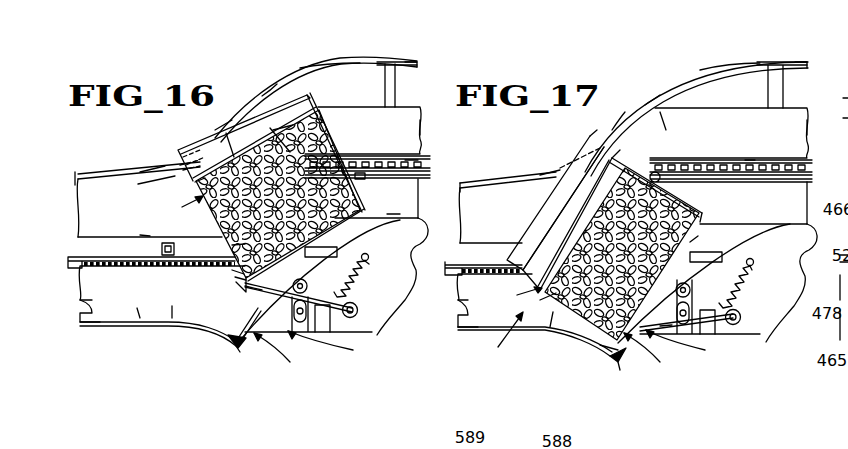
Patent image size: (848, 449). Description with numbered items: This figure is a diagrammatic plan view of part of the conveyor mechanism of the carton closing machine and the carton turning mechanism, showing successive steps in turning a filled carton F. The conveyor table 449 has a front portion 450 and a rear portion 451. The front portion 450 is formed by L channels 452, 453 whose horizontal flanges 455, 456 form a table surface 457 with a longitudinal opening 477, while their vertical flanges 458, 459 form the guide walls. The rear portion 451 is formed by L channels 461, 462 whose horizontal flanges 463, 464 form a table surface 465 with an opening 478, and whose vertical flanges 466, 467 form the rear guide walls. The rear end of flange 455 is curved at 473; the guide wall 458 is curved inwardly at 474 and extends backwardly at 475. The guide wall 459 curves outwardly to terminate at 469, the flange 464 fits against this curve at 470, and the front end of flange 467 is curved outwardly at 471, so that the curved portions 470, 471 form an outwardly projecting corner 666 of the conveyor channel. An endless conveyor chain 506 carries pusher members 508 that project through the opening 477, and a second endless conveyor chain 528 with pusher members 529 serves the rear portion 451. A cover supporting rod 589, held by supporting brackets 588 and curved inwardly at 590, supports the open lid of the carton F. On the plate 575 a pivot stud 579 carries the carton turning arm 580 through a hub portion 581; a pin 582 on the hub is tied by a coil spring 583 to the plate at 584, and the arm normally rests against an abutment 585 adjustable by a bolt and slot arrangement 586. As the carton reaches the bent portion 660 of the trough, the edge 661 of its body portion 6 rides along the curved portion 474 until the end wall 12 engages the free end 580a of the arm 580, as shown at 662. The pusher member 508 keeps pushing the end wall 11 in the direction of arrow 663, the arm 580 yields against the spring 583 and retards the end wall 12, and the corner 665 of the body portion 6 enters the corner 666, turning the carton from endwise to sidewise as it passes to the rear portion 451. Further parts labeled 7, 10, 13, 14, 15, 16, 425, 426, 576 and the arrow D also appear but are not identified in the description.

In FIG. 16, the body portion 6 is at (388, 209).
In FIG. 17, the body portion 6 is at (698, 242).
In FIG. 16, the lid hinge 7 is at (198, 148).
In FIG. 17, the lid hinge 7 is at (535, 240).
In FIG. 16, the box corner 10 is at (249, 284).
In FIG. 17, the box corner 10 is at (700, 226).
In FIG. 16, the end wall 11 is at (320, 158).
In FIG. 17, the end wall 11 is at (698, 206).
In FIG. 16, the end wall 12 is at (232, 245).
In FIG. 17, the end wall 12 is at (533, 302).
In FIG. 16, the lid plate 13 is at (199, 142).
In FIG. 17, the lid plate 13 is at (553, 193).
In FIG. 16, the lid section 14 is at (285, 123).
In FIG. 17, the lid section 14 is at (598, 189).
In FIG. 16, the lid lower section 15 is at (145, 187).
In FIG. 17, the lid lower section 15 is at (531, 264).
In FIG. 16, the lid middle section 16 is at (248, 146).
In FIG. 17, the lid middle section 16 is at (552, 225).
In FIG. 16, the rail assembly 425 is at (397, 157).
In FIG. 17, the rail assembly 425 is at (773, 158).
In FIG. 16, the direction of motion 426 is at (341, 345).
In FIG. 17, the direction of motion 426 is at (696, 346).
In FIG. 16, the conveyor table 449 is at (138, 315).
In FIG. 17, the conveyor table 449 is at (552, 322).
In FIG. 16, the front portion 450 is at (358, 123).
In FIG. 17, the front portion 450 is at (722, 120).
In FIG. 16, the rear portion 451 is at (97, 193).
In FIG. 17, the rear portion 451 is at (478, 202).
In FIG. 16, the L channel 452 is at (422, 128).
In FIG. 17, the L channel 452 is at (811, 132).
In FIG. 16, the L channel 453 is at (408, 226).
In FIG. 17, the L channel 453 is at (782, 238).
In FIG. 16, the horizontal flange 455 is at (372, 128).
In FIG. 17, the horizontal flange 455 is at (674, 140).
In FIG. 16, the horizontal flange 456 is at (401, 203).
In FIG. 17, the horizontal flange 456 is at (743, 213).
In FIG. 16, the table surface 457 is at (430, 195).
In FIG. 17, the table surface 457 is at (805, 210).
In FIG. 16, the vertical flange 458 is at (446, 90).
In FIG. 17, the vertical flange 458 is at (840, 88).
In FIG. 16, the vertical flange 459 is at (369, 258).
In FIG. 17, the vertical flange 459 is at (754, 261).
In FIG. 17, the L channel 461 is at (505, 195).
In FIG. 16, the L channel 462 is at (98, 328).
In FIG. 16, the horizontal flange 463 is at (112, 220).
In FIG. 17, the horizontal flange 463 is at (480, 222).
In FIG. 16, the horizontal flange 464 is at (120, 292).
In FIG. 16, the table surface 465 is at (172, 320).
In FIG. 17, the table surface 465 is at (478, 312).
In FIG. 16, the vertical flange 466 is at (96, 188).
In FIG. 17, the vertical flange 466 is at (486, 190).
In FIG. 16, the vertical flange 467 is at (81, 300).
In FIG. 17, the vertical flange 467 is at (482, 332).
In FIG. 16, the rear end of flange 469 is at (280, 359).
In FIG. 17, the rear end of flange 469 is at (649, 358).
In FIG. 16, the curved guide wall portion 470 is at (250, 313).
In FIG. 17, the curved guide wall portion 470 is at (636, 328).
In FIG. 16, the outwardly curved front end 471 is at (238, 352).
In FIG. 17, the outwardly curved front end 471 is at (612, 362).
In FIG. 17, the curved rear end 473 is at (668, 134).
In FIG. 16, the inwardly curved portion 474 is at (216, 118).
In FIG. 17, the inwardly curved portion 474 is at (650, 102).
In FIG. 16, the backwardly extending portion 475 is at (140, 172).
In FIG. 17, the backwardly extending portion 475 is at (547, 175).
In FIG. 16, the opening 477 is at (427, 158).
In FIG. 17, the opening 477 is at (742, 158).
In FIG. 16, the opening 478 is at (140, 235).
In FIG. 17, the opening 478 is at (508, 284).
In FIG. 16, the endless conveyor chain 506 is at (375, 160).
In FIG. 17, the endless conveyor chain 506 is at (808, 172).
In FIG. 16, the pusher members 508 is at (366, 180).
In FIG. 17, the pusher members 508 is at (690, 190).
In FIG. 16, the endless conveyor chain 528 is at (151, 253).
In FIG. 17, the endless conveyor chain 528 is at (497, 264).
In FIG. 16, the pusher members 529 is at (170, 243).
In FIG. 16, the plate 575 is at (407, 296).
In FIG. 17, the plate 575 is at (768, 315).
In FIG. 16, the frame member 576 is at (335, 247).
In FIG. 17, the frame member 576 is at (719, 253).
In FIG. 16, the pivot stud 579 is at (358, 313).
In FIG. 17, the pivot stud 579 is at (741, 320).
In FIG. 16, the carton turning arm 580 is at (255, 293).
In FIG. 17, the carton turning arm 580 is at (660, 332).
In FIG. 16, the free end 580a is at (232, 270).
In FIG. 17, the free end 580a is at (602, 348).
In FIG. 16, the hub portion 581 is at (372, 329).
In FIG. 17, the hub portion 581 is at (735, 330).
In FIG. 16, the pin 582 is at (330, 325).
In FIG. 17, the pin 582 is at (715, 330).
In FIG. 16, the coil spring 583 is at (354, 285).
In FIG. 17, the coil spring 583 is at (736, 292).
In FIG. 16, the spring anchorage 584 is at (369, 264).
In FIG. 17, the spring anchorage 584 is at (758, 266).
In FIG. 16, the abutment 585 is at (306, 282).
In FIG. 17, the abutment 585 is at (690, 287).
In FIG. 16, the bolt and slot arrangement 586 is at (296, 308).
In FIG. 17, the bolt and slot arrangement 586 is at (690, 308).
In FIG. 16, the supporting brackets 588 is at (391, 72).
In FIG. 17, the supporting brackets 588 is at (785, 72).
In FIG. 16, the cover supporting rod 589 is at (347, 64).
In FIG. 17, the cover supporting rod 589 is at (760, 66).
In FIG. 16, the inwardly curved rear end 590 is at (267, 95).
In FIG. 17, the inwardly curved rear end 590 is at (617, 125).
In FIG. 16, the bent portion 660 is at (182, 164).
In FIG. 16, the edge 661 is at (198, 180).
In FIG. 16, the engagement point 662 is at (235, 277).
In FIG. 16, the arrow 663 is at (264, 182).
In FIG. 17, the arrow 663 is at (622, 254).
In FIG. 17, the corner 665 is at (528, 327).
In FIG. 16, the outwardly projecting corner 666 is at (222, 345).
In FIG. 17, the outwardly projecting corner 666 is at (620, 368).
In FIG. 16, the filled carton F is at (185, 208).
In FIG. 17, the filled carton F is at (522, 296).
In FIG. 16, the direction D is at (289, 344).
In FIG. 17, the direction D is at (510, 355).